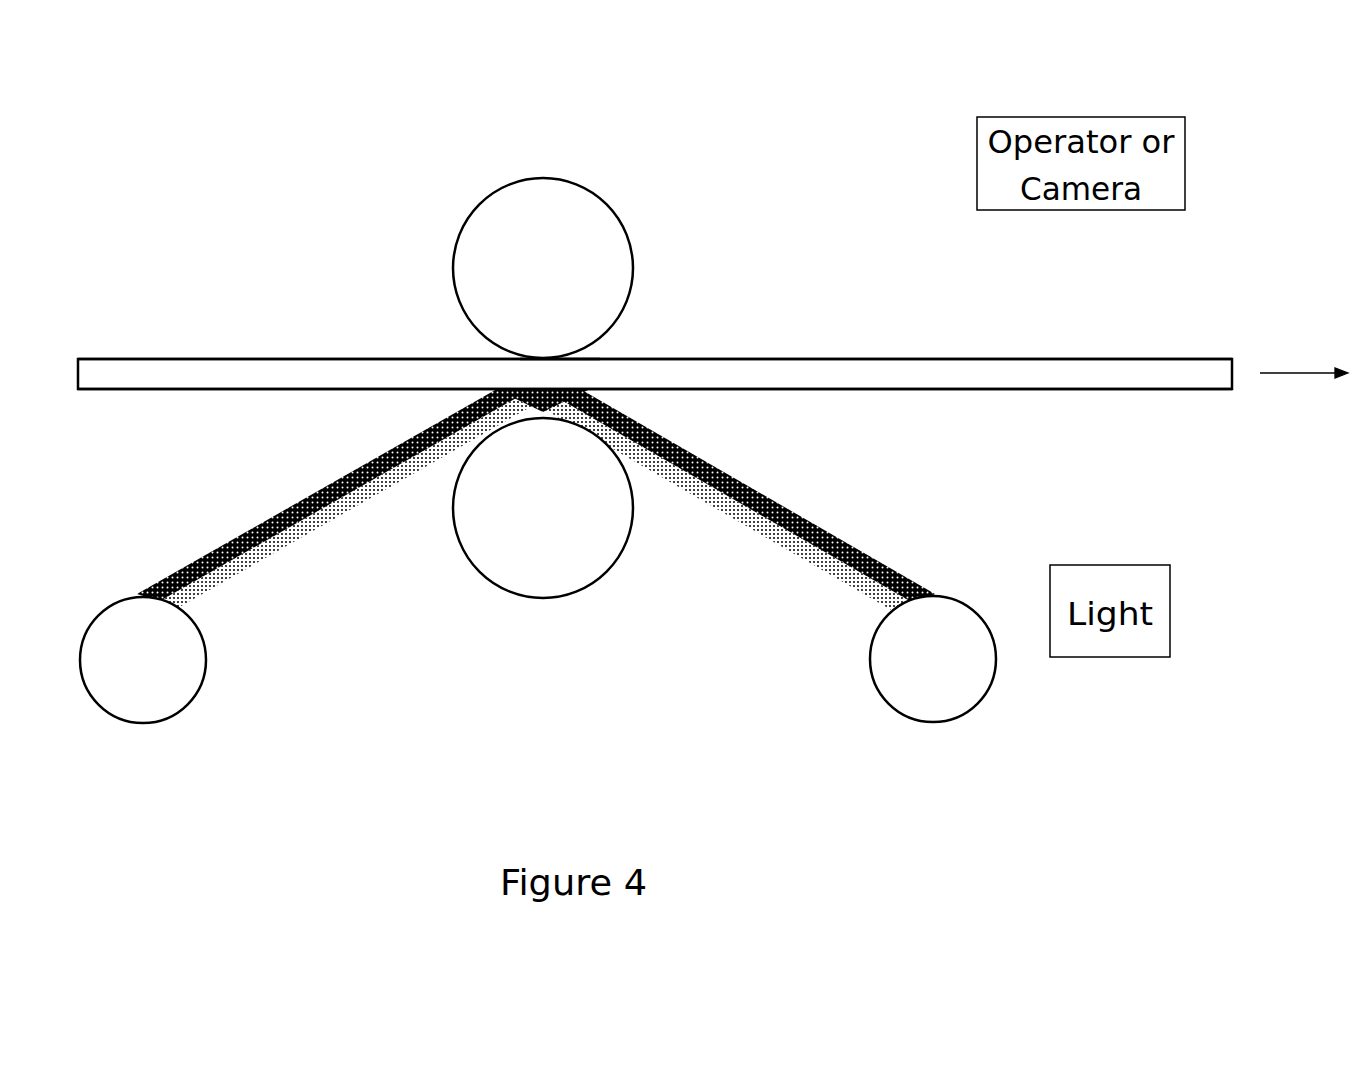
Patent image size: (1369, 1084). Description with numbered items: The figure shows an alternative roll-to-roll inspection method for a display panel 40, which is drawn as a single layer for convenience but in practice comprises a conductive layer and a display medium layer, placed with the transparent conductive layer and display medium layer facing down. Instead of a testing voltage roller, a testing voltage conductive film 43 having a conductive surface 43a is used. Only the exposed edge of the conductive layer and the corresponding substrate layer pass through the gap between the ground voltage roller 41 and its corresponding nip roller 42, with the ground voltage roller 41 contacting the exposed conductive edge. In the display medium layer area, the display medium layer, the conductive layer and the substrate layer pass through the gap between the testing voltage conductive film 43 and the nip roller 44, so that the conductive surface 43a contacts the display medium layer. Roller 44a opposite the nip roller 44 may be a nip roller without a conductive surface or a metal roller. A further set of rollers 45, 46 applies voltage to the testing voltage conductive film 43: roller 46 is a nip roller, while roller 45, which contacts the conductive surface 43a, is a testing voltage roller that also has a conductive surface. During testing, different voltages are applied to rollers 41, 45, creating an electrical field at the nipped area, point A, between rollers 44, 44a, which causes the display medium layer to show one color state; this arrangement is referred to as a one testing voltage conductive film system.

The display panel 40 is at (1106, 361).
The ground voltage roller 41 is at (655, 417).
The nip roller 42 is at (655, 329).
The testing voltage conductive film 43 is at (723, 536).
The conductive surface 43a is at (185, 545).
The nip roller 44 is at (543, 268).
The nip roller 44a is at (543, 508).
The testing voltage roller 45 is at (739, 497).
The nip roller 46 is at (831, 577).
The point A is at (570, 368).